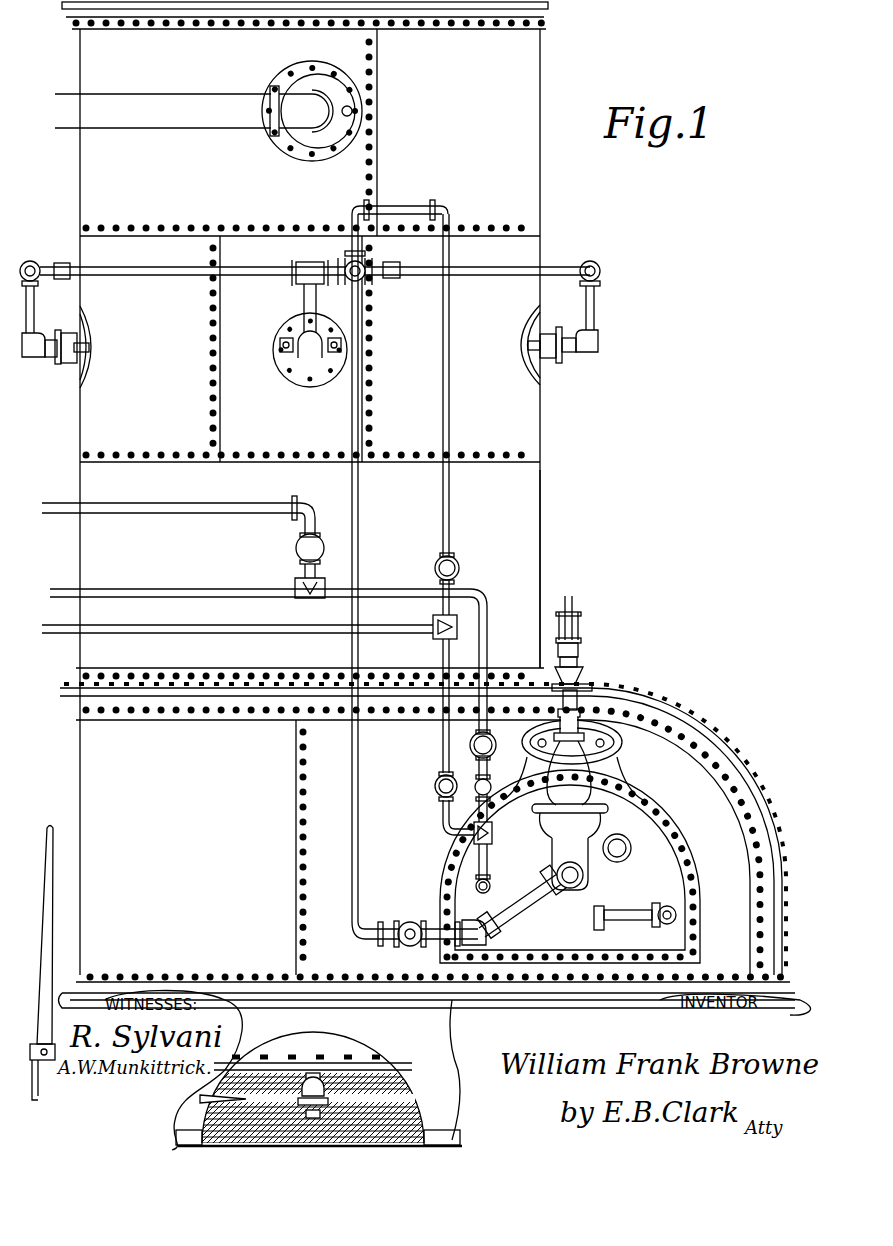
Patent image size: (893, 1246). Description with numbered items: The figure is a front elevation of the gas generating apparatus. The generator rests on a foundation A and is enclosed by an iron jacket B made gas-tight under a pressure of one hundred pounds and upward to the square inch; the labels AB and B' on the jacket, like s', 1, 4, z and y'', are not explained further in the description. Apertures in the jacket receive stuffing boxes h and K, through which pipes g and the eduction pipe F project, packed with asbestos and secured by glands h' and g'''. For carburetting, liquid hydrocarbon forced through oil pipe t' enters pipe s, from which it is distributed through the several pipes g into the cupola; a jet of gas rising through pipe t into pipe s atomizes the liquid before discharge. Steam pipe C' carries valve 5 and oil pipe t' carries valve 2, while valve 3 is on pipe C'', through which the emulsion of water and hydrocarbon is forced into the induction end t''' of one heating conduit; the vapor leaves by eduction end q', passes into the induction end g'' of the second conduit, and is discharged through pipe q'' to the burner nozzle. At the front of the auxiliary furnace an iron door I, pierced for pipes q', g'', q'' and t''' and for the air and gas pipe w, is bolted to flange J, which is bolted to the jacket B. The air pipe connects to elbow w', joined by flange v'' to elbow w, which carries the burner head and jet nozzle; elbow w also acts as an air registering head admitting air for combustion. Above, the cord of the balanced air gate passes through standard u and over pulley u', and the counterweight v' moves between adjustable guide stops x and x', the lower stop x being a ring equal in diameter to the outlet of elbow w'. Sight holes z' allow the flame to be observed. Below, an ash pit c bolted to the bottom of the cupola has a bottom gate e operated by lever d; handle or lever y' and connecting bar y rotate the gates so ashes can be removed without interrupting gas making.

The iron jacket B is at (412, 492).
The vessel section AB is at (568, 569).
The dome of lower vessel B' is at (424, 829).
The foundation A is at (427, 1069).
The eduction pipe F is at (194, 112).
The stuffing box K is at (322, 78).
The gland g''' is at (382, 95).
The pipe s is at (315, 256).
The valve on gas pipe s' is at (225, 261).
The pipes g is at (321, 308).
The stuffing box h is at (303, 360).
The gland h' is at (326, 350).
The pulley u' is at (432, 478).
The standard u is at (581, 654).
The adjustable guide stop x' is at (594, 663).
The counterweight v' is at (580, 688).
The adjustable guide stop x is at (590, 682).
The pipe t is at (436, 573).
The oil pipe t' is at (258, 524).
The steam pipe C' is at (178, 507).
The emulsion pipe C'' is at (287, 719).
The valve 1 is at (410, 946).
The valve 2 is at (437, 786).
The valve 3 is at (476, 745).
The valve 4 is at (455, 568).
The valve 5 is at (319, 565).
The flange v'' is at (499, 831).
The induction end of conduit t''' is at (501, 874).
The pipe q'' is at (501, 933).
The wing bracket z is at (576, 742).
The flange J is at (603, 780).
The iron door I is at (672, 873).
The elbow w' is at (570, 803).
The elbow w is at (569, 859).
The sight hole z' is at (632, 849).
The induction end of conduit g'' is at (600, 902).
The eduction end of conduit q' is at (640, 901).
The connecting bar y is at (211, 1103).
The handle or lever y' is at (52, 943).
The lever bracket y'' is at (32, 1080).
The lever d is at (306, 1098).
The ash pit c is at (311, 1061).
The bottom gate e is at (318, 1072).